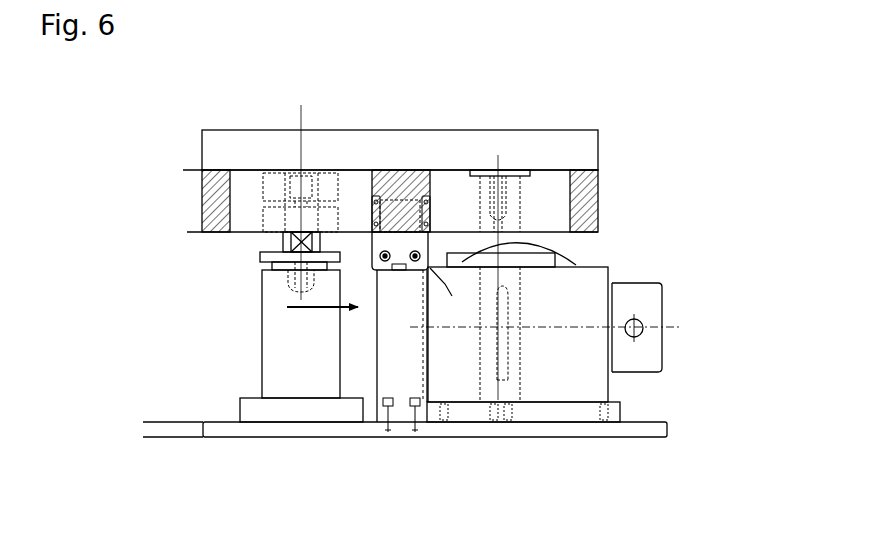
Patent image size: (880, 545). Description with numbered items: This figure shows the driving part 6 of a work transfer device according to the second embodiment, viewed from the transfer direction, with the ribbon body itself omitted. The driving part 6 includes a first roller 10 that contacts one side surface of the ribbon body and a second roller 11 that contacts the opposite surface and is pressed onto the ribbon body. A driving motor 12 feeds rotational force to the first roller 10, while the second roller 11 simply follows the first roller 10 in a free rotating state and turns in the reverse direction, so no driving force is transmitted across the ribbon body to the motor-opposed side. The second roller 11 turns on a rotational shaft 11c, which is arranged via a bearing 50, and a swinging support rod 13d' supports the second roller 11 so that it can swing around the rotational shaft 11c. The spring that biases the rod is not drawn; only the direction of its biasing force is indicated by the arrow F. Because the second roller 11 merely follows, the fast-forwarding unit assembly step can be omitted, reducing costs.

The driving part 6 is at (636, 108).
The first roller 10 is at (600, 195).
The second roller 11 is at (202, 182).
The rotational shaft 11c is at (283, 243).
The flange 13d' is at (229, 325).
The bearing 50 is at (328, 192).
The driving motor 12 is at (547, 372).
The arrow F is at (318, 312).